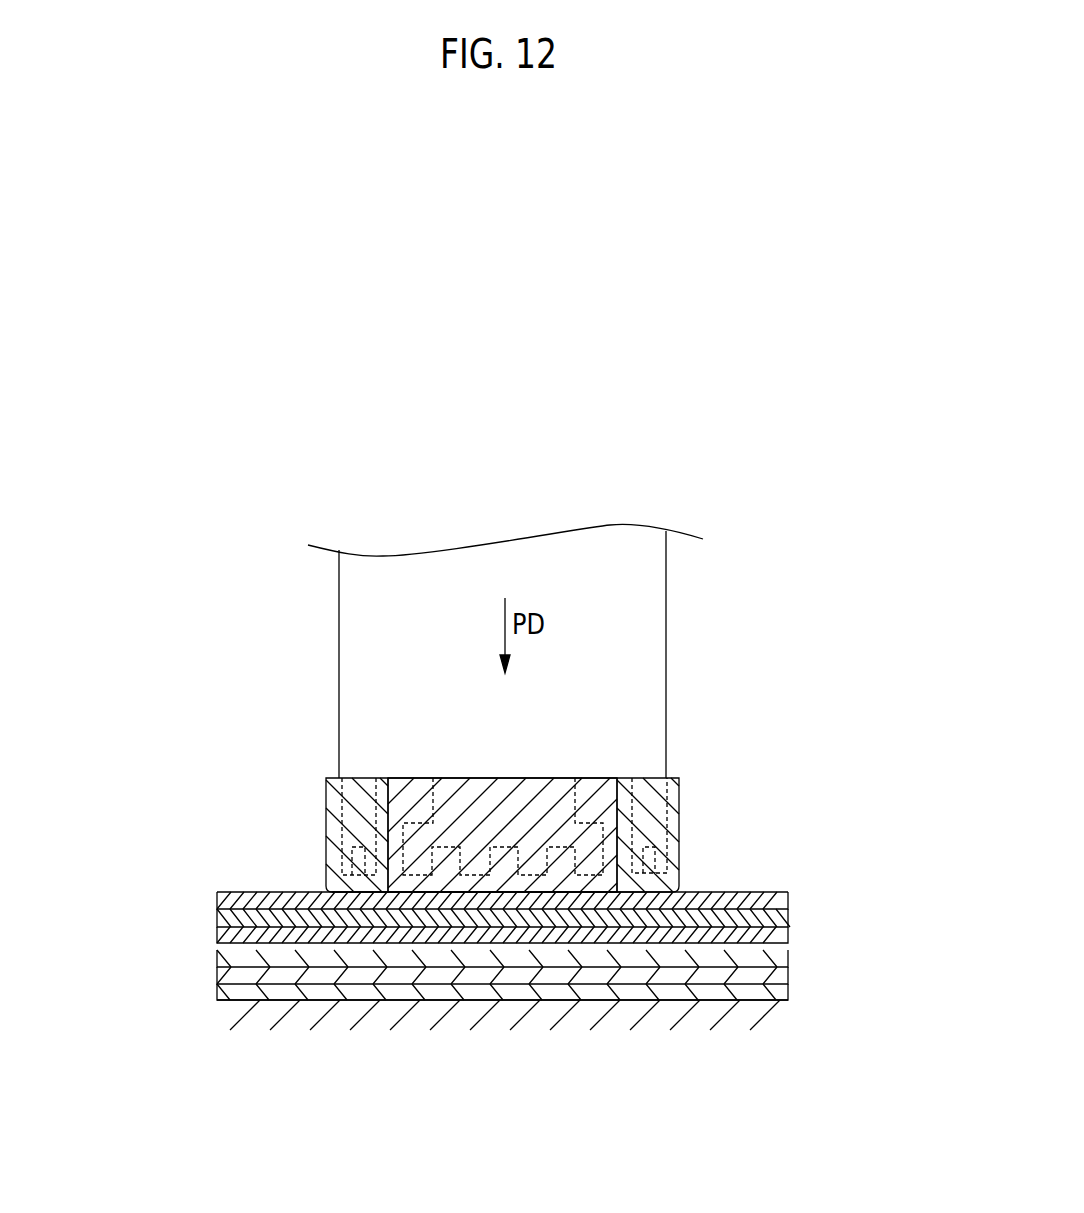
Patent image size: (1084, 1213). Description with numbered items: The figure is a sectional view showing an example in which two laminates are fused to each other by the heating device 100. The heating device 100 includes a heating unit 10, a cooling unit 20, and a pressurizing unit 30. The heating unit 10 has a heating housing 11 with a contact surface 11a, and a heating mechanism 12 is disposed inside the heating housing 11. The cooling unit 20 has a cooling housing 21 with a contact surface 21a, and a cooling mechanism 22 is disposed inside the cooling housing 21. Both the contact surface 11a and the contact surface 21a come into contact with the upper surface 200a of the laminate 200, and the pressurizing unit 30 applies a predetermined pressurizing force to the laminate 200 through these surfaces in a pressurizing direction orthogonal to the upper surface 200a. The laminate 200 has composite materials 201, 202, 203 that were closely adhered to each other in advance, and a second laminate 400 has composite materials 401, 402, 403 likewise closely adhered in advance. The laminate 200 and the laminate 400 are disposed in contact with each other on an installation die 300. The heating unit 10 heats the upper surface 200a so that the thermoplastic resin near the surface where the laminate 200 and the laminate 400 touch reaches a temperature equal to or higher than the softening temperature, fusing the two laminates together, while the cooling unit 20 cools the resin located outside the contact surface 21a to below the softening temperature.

The heating device 100 is at (254, 562).
The heating unit 10 is at (408, 778).
The heating housing 11 is at (536, 795).
The contact surface 11a is at (478, 895).
The heating mechanism 12 is at (593, 823).
The cooling unit 20 is at (326, 793).
The cooling housing 21 is at (360, 793).
The contact surface 21a is at (343, 895).
The cooling mechanism 22 is at (337, 828).
The pressurizing unit 30 is at (651, 703).
The laminate 200 is at (585, 935).
The upper surface 200a is at (763, 890).
The composite material 201 is at (781, 897).
The composite material 202 is at (781, 915).
The composite material 203 is at (544, 959).
The installation die 300 is at (777, 1022).
The laminate 400 is at (417, 996).
The composite material 401 is at (217, 958).
The composite material 402 is at (217, 975).
The composite material 403 is at (217, 993).